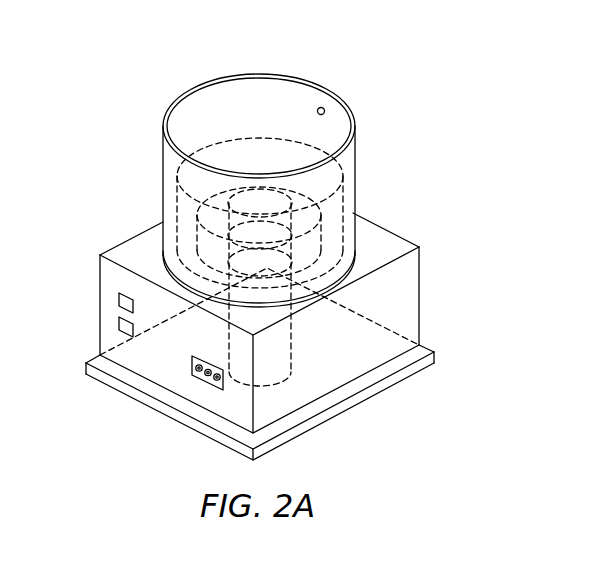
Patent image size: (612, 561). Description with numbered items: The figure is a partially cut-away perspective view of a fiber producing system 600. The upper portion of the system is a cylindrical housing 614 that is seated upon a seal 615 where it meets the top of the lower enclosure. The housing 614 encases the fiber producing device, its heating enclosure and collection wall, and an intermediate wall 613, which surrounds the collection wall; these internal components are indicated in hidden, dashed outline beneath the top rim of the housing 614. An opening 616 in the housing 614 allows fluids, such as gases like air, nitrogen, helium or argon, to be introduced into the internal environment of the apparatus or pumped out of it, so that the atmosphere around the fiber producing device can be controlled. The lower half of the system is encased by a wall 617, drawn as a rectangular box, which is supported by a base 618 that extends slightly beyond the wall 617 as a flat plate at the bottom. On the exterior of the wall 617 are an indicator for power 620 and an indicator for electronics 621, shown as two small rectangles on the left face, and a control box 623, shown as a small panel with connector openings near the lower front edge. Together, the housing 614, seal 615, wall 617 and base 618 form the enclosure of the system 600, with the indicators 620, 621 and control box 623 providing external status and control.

The fiber producing system 600 is at (384, 125).
The intermediate wall 613 is at (260, 140).
The housing 614 is at (163, 130).
The seal 615 is at (360, 247).
The opening 616 is at (323, 107).
The wall 617 is at (403, 289).
The base 618 is at (177, 410).
The indicator for power 620 is at (118, 296).
The indicator for electronics 621 is at (118, 321).
The control box 623 is at (212, 400).